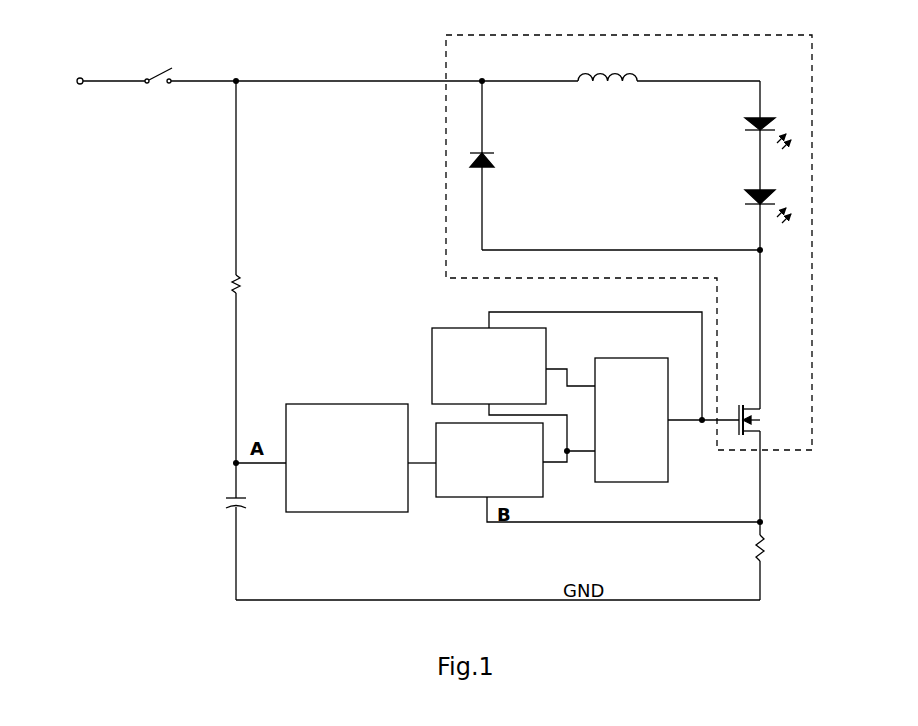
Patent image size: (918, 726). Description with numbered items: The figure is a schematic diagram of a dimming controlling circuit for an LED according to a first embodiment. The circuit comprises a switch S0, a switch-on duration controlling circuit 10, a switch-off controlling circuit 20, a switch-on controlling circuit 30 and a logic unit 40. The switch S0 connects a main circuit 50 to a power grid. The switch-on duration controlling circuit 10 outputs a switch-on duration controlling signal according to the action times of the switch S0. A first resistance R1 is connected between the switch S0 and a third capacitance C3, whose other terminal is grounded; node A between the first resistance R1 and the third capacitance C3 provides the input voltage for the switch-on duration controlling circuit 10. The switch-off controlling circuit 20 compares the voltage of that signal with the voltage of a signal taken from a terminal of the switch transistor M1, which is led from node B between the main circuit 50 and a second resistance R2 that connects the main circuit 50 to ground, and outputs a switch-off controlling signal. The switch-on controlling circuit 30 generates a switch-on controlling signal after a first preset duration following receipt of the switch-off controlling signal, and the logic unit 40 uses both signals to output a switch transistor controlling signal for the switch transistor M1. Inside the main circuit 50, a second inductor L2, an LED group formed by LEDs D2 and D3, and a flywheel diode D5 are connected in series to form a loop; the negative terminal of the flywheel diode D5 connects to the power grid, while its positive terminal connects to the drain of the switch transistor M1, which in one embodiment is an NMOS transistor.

The switch-on duration controlling circuit 10 is at (343, 512).
The switch-off controlling circuit 20 is at (457, 497).
The switch-on controlling circuit 30 is at (474, 328).
The logic unit 40 is at (656, 482).
The main circuit 50 is at (444, 150).
The switch S0 is at (127, 66).
The second inductor L2 is at (607, 67).
The flywheel diode D5 is at (497, 165).
The LED D2 is at (750, 132).
The LED D3 is at (750, 206).
The switch transistor M1 is at (751, 420).
The first resistance R1 is at (220, 286).
The second resistance R2 is at (742, 549).
The third capacitance C3 is at (219, 503).